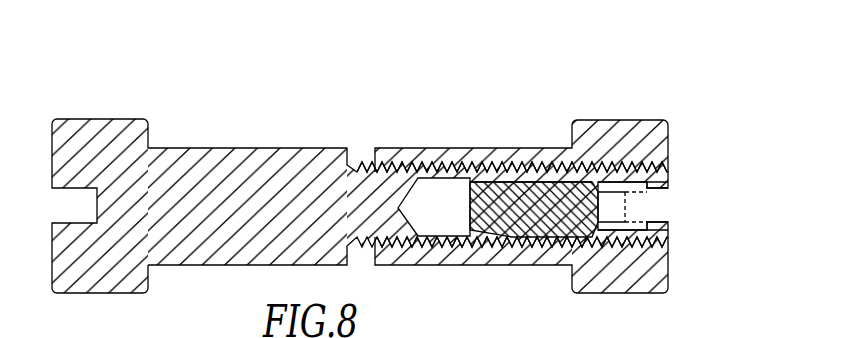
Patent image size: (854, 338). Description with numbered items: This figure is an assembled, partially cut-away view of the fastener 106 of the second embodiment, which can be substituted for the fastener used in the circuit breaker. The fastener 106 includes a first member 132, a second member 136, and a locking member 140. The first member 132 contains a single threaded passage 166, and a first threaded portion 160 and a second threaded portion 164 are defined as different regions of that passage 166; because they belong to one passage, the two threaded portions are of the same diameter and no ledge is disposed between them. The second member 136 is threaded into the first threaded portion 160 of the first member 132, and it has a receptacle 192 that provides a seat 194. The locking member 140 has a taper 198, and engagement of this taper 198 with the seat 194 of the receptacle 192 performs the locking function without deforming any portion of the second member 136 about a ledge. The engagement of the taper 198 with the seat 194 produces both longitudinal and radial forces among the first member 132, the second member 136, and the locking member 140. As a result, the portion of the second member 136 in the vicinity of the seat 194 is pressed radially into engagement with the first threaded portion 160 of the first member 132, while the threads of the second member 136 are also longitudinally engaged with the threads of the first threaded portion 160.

The fastener 106 is at (284, 113).
The second member 136 is at (129, 114).
The first member 132 is at (616, 110).
The first threaded portion 160 is at (400, 166).
The seat 194 is at (497, 176).
The receptacle 192 is at (458, 180).
The taper 198 is at (481, 181).
The locking member 140 is at (452, 230).
The second threaded portion 164 is at (633, 172).
The threaded passage 166 is at (668, 240).